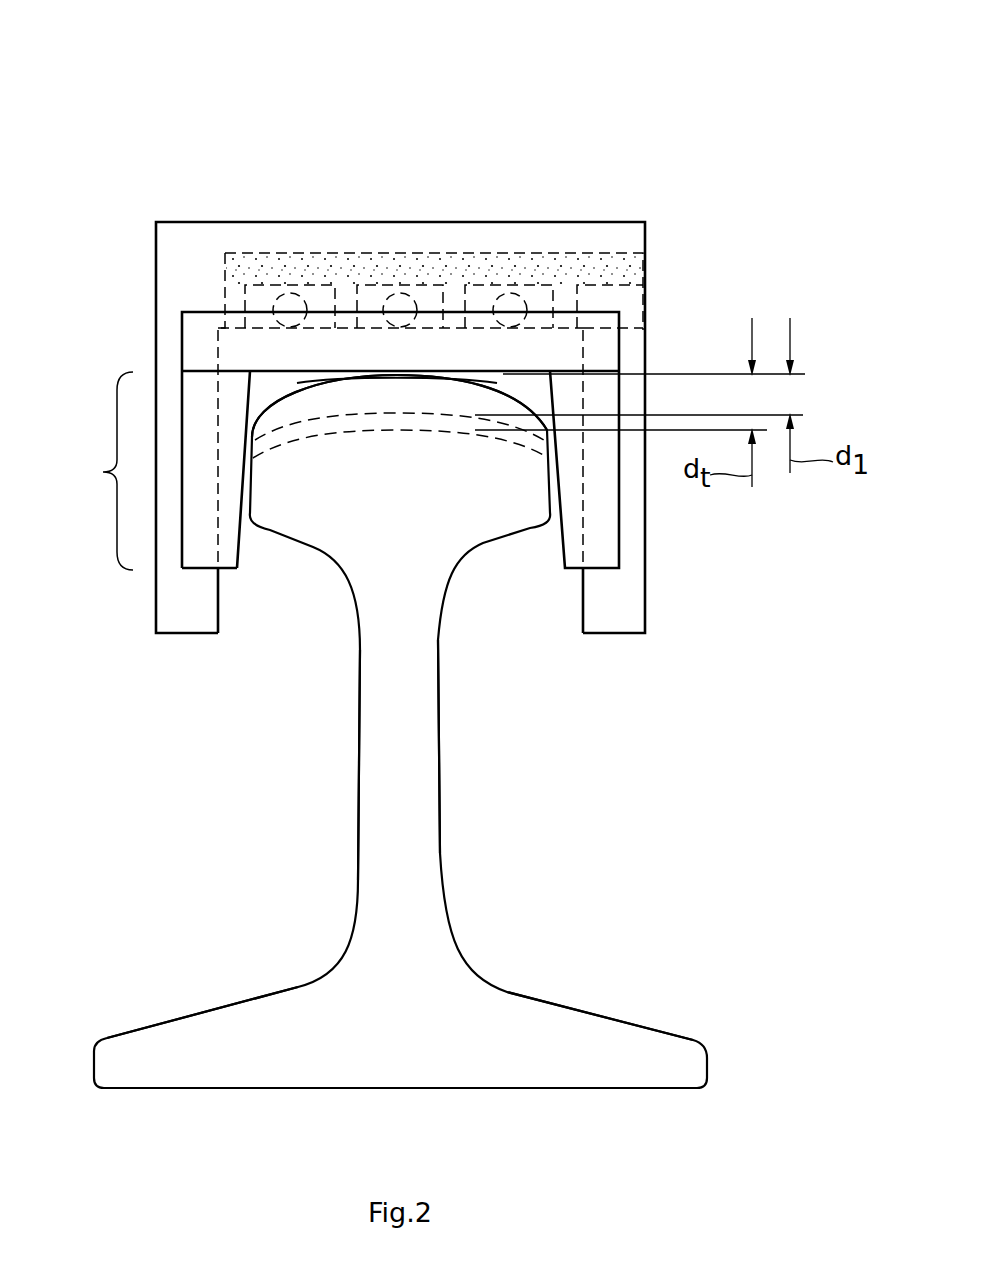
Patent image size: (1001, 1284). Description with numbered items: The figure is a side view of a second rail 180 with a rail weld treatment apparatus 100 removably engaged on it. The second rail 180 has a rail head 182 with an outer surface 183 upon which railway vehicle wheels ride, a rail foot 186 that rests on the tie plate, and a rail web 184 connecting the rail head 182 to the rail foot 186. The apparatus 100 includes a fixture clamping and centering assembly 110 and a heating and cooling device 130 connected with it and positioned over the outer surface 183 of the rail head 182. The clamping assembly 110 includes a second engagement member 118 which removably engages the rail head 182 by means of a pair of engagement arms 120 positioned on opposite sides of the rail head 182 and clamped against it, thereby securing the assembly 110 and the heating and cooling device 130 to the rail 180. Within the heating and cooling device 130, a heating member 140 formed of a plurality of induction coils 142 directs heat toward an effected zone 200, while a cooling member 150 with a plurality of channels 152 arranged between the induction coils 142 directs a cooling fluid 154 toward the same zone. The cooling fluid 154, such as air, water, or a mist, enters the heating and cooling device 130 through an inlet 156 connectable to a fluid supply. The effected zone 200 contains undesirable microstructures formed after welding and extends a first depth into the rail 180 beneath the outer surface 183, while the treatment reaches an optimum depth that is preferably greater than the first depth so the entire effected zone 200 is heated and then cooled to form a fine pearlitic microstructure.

The rail weld treatment apparatus 100 is at (190, 68).
The fixture clamping and centering assembly 110 is at (102, 472).
The second engagement member 118 is at (603, 343).
The engagement arms 120 is at (200, 552).
The heating and cooling device 130 is at (182, 263).
The heating member 140 is at (281, 286).
The induction coils 142 is at (313, 287).
The cooling member 150 is at (614, 254).
The channels 152 is at (227, 276).
The cooling fluid 154 is at (550, 263).
The inlet 156 is at (650, 270).
The second rail 180 is at (356, 838).
The rail head 182 is at (317, 522).
The outer surface 183 is at (297, 387).
The rail web 184 is at (416, 780).
The rail foot 186 is at (602, 1032).
The effected zone 200 is at (467, 408).